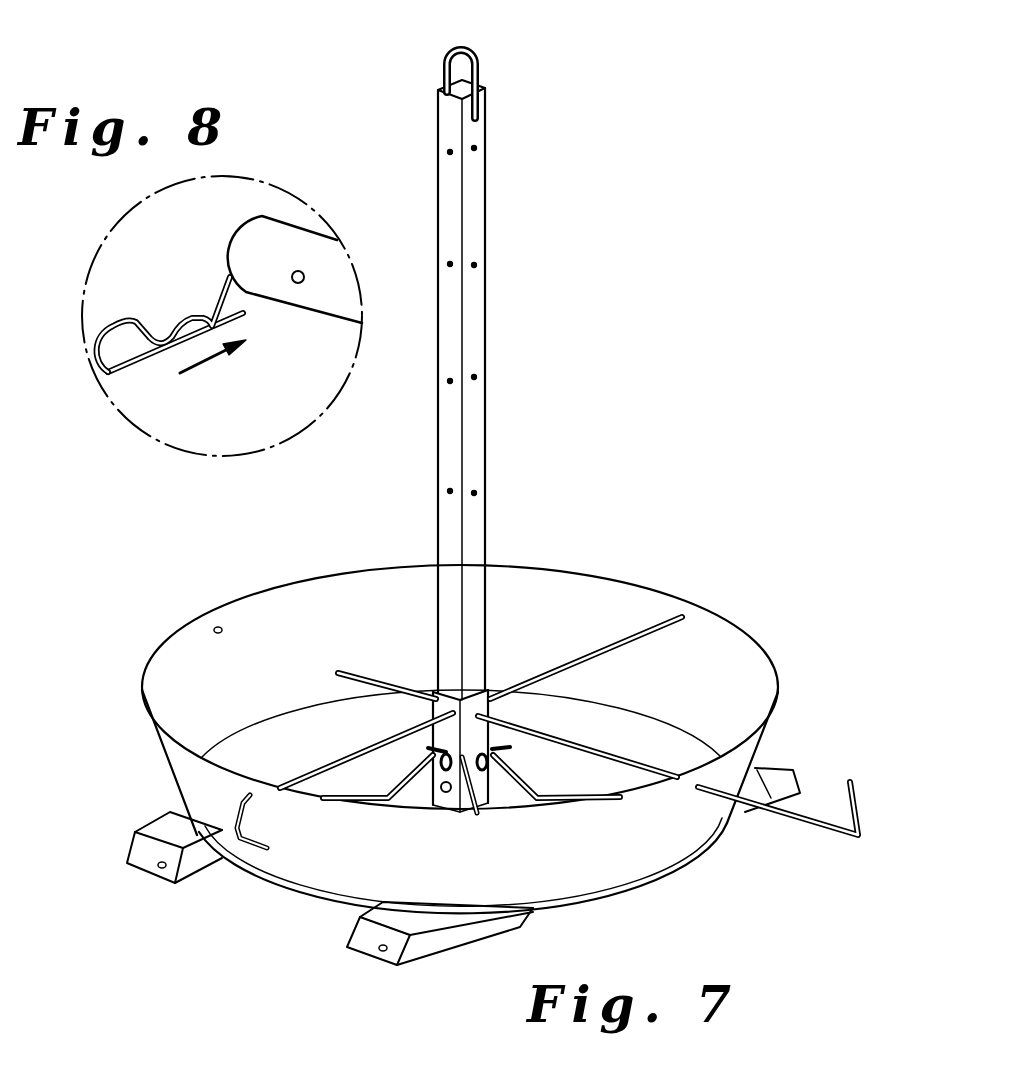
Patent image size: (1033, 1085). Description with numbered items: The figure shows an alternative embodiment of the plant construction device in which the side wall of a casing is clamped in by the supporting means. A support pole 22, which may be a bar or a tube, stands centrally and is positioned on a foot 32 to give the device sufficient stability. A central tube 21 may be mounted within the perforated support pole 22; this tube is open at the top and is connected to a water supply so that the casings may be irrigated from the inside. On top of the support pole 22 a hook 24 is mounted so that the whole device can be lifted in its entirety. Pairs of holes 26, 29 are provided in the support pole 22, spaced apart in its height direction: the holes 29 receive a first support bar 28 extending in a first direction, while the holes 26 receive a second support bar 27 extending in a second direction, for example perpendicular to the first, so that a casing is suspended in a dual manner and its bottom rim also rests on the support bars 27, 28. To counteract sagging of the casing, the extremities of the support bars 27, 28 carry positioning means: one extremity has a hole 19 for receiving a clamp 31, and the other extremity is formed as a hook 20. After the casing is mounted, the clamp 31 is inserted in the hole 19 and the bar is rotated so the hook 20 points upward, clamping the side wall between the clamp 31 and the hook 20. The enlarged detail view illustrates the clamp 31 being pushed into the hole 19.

In FIG. 8, the hole 19 is at (298, 284).
In FIG. 7, the hole 19 is at (336, 677).
In FIG. 7, the hook 20 is at (868, 800).
In FIG. 7, the central tube 21 is at (473, 338).
In FIG. 7, the support pole 22 is at (475, 705).
In FIG. 7, the hook 24 is at (478, 48).
In FIG. 7, the hole 26 is at (450, 607).
In FIG. 7, the second support bar 27 is at (527, 678).
In FIG. 7, the first support bar 28 is at (580, 748).
In FIG. 7, the hole 29 is at (470, 603).
In FIG. 8, the clamp 31 is at (133, 317).
In FIG. 7, the foot 32 is at (415, 953).